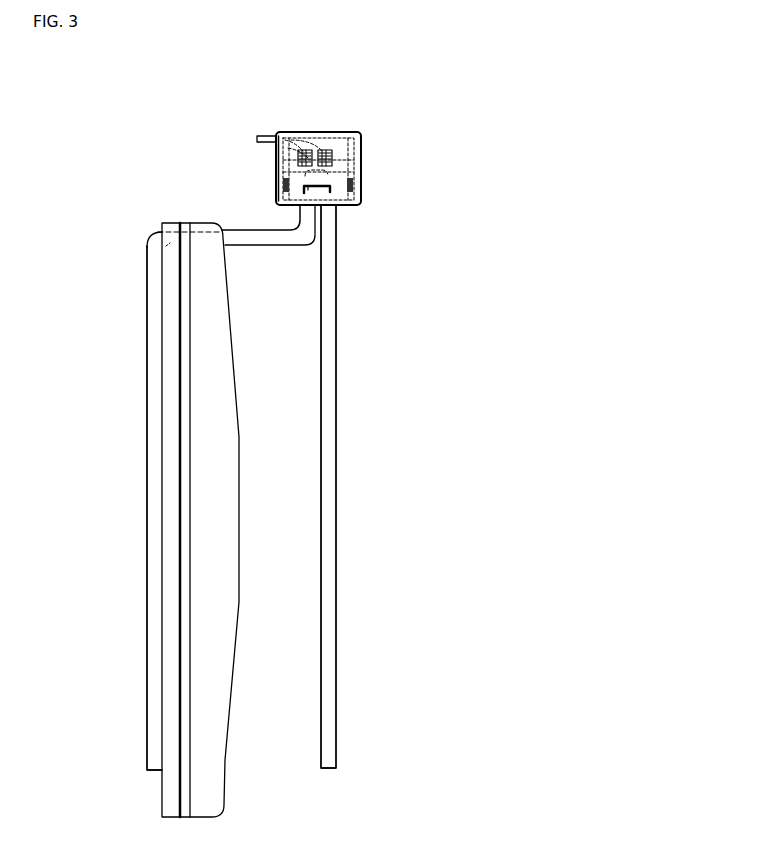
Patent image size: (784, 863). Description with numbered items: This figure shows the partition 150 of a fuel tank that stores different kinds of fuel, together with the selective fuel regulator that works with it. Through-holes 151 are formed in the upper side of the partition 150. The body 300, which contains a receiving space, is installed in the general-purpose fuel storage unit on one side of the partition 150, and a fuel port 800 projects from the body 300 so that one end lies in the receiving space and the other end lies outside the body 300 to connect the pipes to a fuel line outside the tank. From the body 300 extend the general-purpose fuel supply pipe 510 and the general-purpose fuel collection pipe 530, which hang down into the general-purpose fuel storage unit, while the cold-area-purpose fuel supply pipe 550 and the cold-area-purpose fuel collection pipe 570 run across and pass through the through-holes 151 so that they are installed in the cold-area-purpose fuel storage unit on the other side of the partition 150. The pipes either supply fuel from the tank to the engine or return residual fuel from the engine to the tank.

The partition 150 is at (212, 802).
The through-holes 151 is at (182, 234).
The body 300 is at (373, 130).
The general-purpose fuel supply pipe 510 is at (332, 560).
The general-purpose fuel collection pipe 530 is at (328, 486).
The cold-area-purpose fuel supply pipe 550 is at (152, 538).
The cold-area-purpose fuel collection pipe 570 is at (154, 508).
The fuel port 800 is at (265, 127).